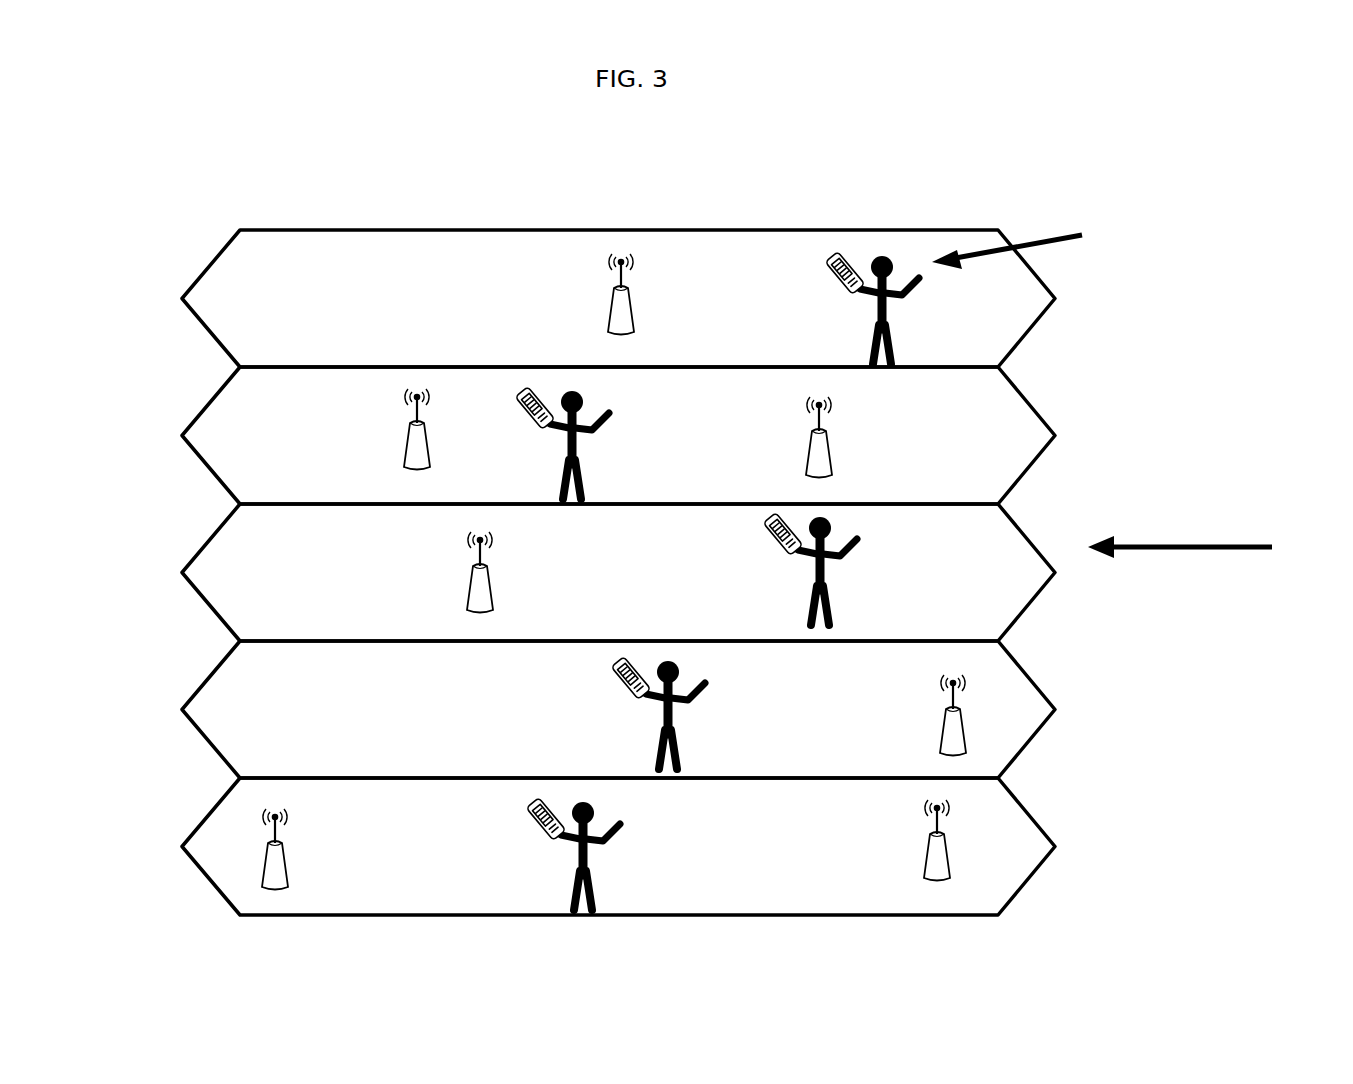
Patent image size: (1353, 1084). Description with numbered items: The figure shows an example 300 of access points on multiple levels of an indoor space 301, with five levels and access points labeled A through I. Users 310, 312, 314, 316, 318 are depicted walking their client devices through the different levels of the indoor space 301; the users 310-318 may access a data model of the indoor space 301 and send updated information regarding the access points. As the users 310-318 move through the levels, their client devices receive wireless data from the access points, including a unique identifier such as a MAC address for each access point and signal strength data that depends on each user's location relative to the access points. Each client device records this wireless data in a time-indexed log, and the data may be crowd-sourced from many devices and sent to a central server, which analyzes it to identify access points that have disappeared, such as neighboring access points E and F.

The wireless environment 300 is at (1267, 118).
The indoor space 301 is at (238, 216).
The user 310 is at (557, 855).
The user 312 is at (656, 720).
The user 314 is at (800, 576).
The user 316 is at (553, 449).
The user 318 is at (863, 313).